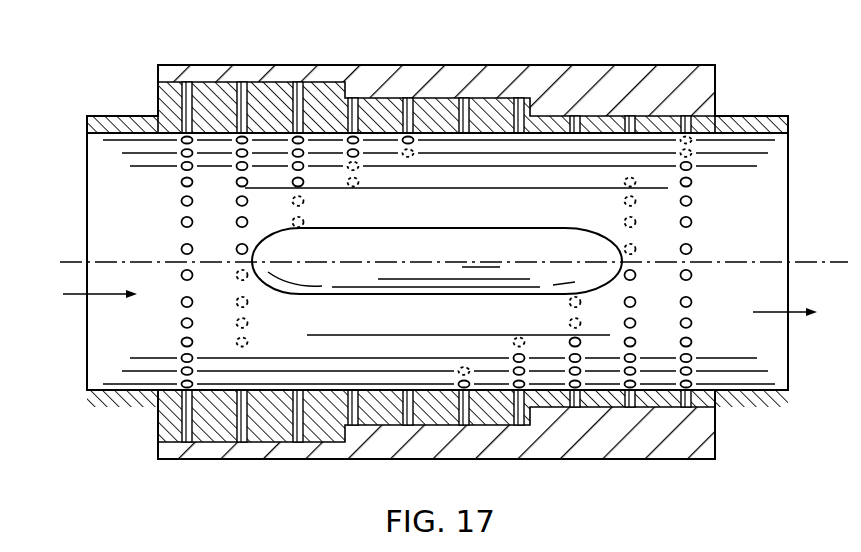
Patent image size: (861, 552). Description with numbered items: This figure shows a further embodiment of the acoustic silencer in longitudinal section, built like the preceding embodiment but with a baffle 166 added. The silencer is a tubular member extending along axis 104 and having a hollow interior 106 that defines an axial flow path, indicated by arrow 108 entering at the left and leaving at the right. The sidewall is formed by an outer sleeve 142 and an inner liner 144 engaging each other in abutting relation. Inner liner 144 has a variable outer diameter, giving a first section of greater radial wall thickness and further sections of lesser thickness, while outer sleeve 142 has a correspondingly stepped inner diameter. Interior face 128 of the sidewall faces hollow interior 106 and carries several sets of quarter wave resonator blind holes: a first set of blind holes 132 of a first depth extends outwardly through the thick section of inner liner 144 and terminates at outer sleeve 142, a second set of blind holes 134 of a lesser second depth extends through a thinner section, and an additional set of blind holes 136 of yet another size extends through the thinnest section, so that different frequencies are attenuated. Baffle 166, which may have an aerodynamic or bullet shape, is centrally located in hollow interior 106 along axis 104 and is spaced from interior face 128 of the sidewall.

The outer sleeve 142 is at (198, 66).
The inner liner 144 is at (120, 116).
The interior face 128 is at (98, 134).
The hollow interior 106 is at (491, 218).
The first set of blind holes 132 is at (240, 221).
The second set of blind holes 134 is at (409, 156).
The additional set of blind holes 136 is at (684, 221).
The baffle 166 is at (438, 298).
The axis 104 is at (758, 262).
The arrow 108 is at (101, 296).